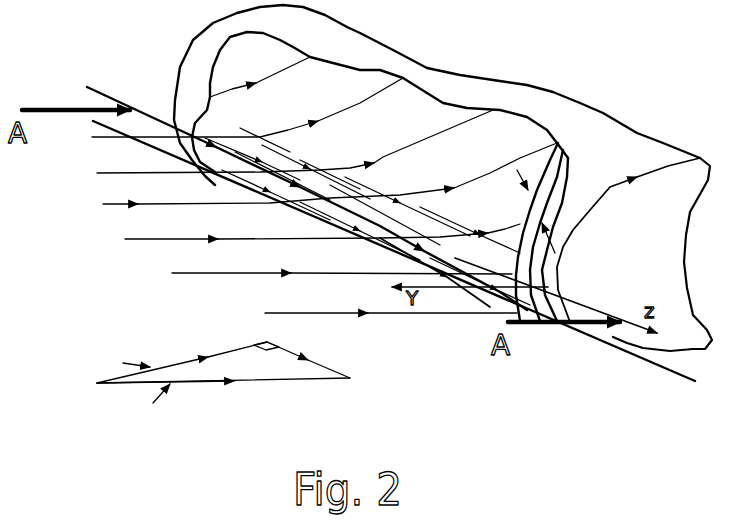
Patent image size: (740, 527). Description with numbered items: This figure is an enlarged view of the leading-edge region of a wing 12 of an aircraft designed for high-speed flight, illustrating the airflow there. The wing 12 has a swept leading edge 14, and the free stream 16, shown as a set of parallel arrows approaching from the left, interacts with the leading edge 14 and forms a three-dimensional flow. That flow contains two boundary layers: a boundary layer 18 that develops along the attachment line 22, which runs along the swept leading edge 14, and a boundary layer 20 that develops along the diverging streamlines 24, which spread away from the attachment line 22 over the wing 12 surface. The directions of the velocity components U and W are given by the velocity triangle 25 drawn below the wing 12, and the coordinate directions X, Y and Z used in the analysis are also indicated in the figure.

The wing 12 is at (655, 153).
The swept leading edge 14 is at (187, 93).
The free stream 16 is at (125, 204).
The boundary layer 18 is at (248, 153).
The boundary layer 20 is at (530, 210).
The attachment line 22 is at (113, 97).
The diverging streamlines 24 is at (366, 97).
The velocity triangle 25 is at (177, 362).